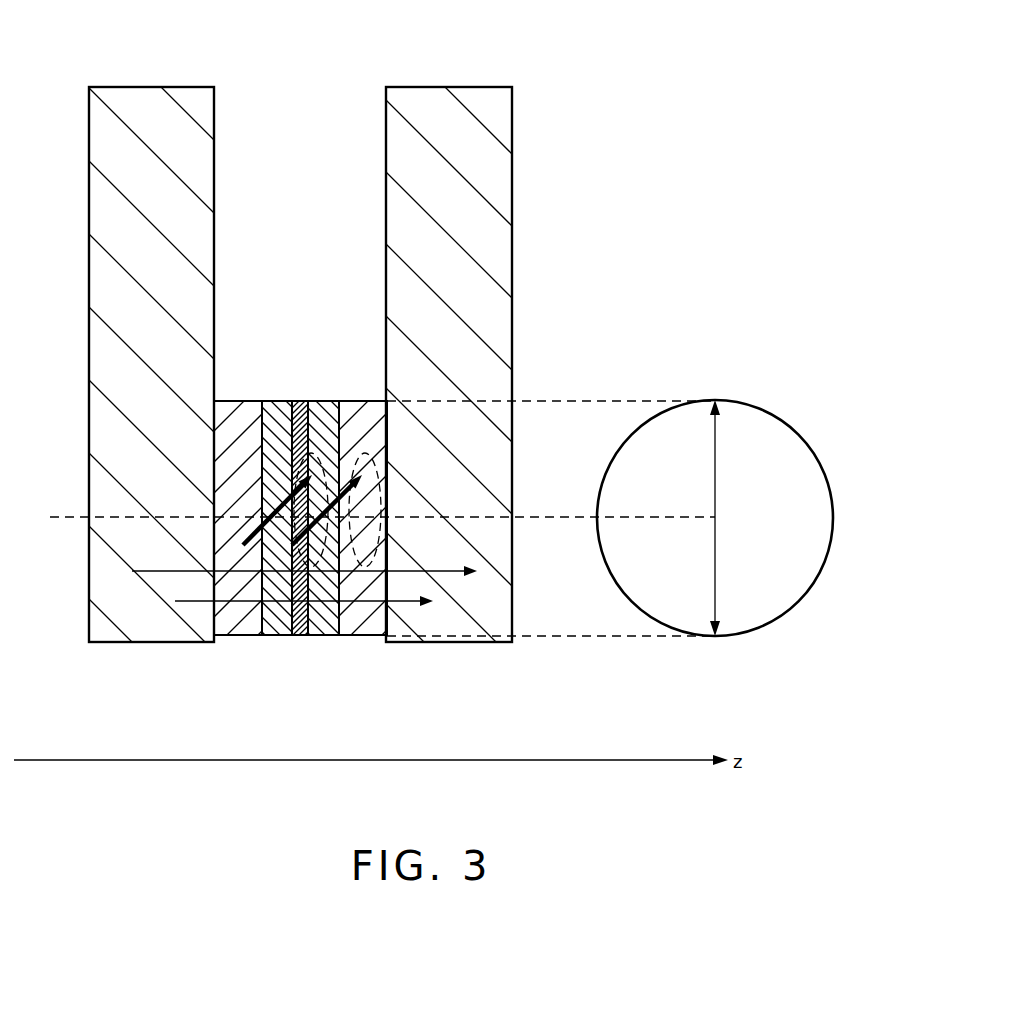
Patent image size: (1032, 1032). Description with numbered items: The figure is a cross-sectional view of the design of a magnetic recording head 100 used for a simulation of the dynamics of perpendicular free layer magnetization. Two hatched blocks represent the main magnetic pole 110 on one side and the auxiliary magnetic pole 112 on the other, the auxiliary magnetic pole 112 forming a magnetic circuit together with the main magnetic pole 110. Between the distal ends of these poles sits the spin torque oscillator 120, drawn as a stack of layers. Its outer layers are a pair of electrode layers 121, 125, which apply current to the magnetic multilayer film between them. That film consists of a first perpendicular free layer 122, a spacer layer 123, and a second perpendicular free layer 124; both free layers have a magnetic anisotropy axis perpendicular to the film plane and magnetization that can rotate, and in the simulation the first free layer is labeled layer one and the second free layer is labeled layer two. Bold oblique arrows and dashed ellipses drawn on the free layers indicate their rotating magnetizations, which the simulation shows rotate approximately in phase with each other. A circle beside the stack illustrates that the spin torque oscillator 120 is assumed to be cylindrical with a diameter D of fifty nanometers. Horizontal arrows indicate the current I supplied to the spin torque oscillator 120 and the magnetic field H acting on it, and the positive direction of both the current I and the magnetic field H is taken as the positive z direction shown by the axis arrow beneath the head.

The magnetic recording head 100 is at (682, 60).
The main magnetic pole 110 is at (89, 120).
The auxiliary magnetic pole 112 is at (512, 121).
The spin torque oscillator 120 is at (380, 291).
The electrode layer 121 is at (352, 400).
The perpendicular free layer (first perpendicular free layer, L1) 122 is at (323, 400).
The spacer layer 123 is at (297, 400).
The perpendicular free layer (second perpendicular free layer, L2) 124 is at (272, 400).
The electrode layer 125 is at (240, 400).
The diameter D is at (715, 518).
The magnetic field H is at (242, 574).
The current I is at (198, 604).